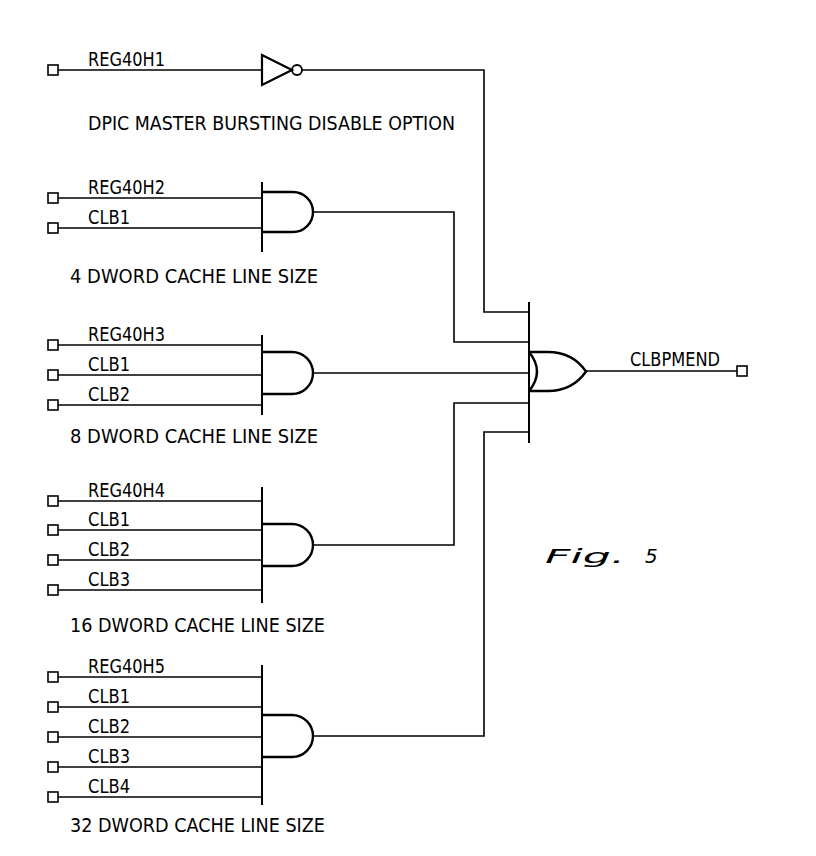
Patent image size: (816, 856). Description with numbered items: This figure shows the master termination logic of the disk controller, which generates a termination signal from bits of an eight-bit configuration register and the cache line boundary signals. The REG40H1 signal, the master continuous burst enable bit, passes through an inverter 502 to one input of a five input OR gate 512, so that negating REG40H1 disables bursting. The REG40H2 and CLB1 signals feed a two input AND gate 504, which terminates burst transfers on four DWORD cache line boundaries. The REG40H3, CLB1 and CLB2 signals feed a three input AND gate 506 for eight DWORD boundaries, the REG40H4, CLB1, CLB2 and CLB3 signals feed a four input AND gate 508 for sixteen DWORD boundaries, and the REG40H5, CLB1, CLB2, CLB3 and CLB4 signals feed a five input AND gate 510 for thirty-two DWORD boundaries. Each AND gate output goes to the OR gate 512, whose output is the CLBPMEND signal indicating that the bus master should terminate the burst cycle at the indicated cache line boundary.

The inverter 502 is at (276, 56).
The two input AND gate 504 is at (283, 192).
The three input AND gate 506 is at (283, 352).
The four input AND gate 508 is at (283, 524).
The five input AND gate 510 is at (283, 715).
The five input OR gate 512 is at (555, 351).